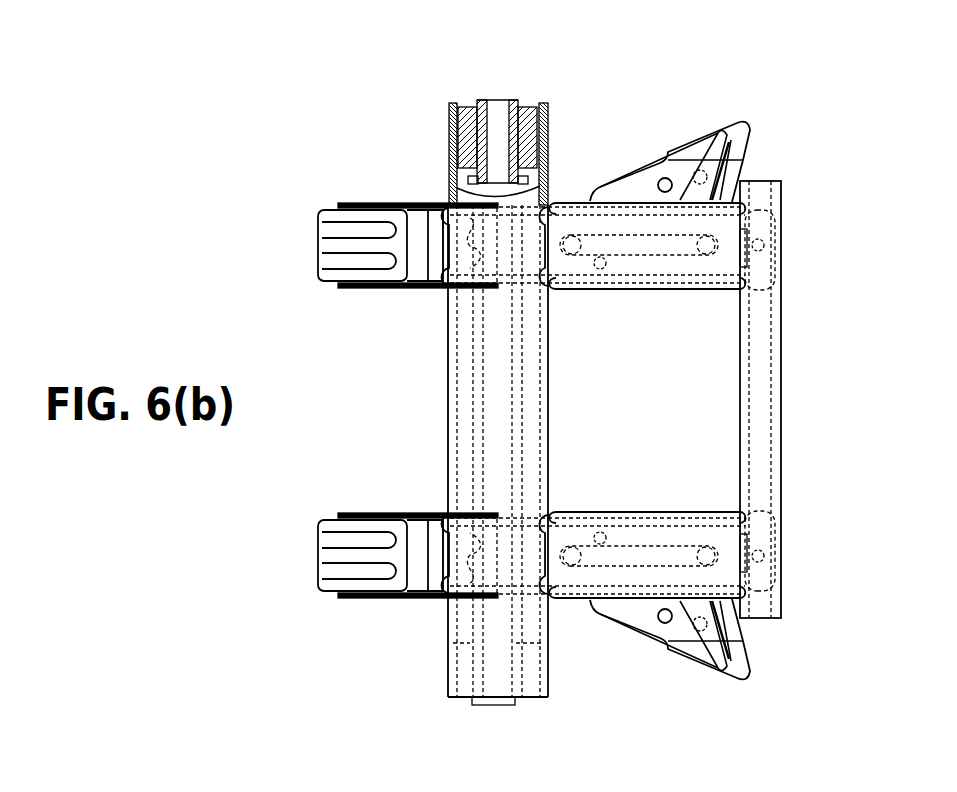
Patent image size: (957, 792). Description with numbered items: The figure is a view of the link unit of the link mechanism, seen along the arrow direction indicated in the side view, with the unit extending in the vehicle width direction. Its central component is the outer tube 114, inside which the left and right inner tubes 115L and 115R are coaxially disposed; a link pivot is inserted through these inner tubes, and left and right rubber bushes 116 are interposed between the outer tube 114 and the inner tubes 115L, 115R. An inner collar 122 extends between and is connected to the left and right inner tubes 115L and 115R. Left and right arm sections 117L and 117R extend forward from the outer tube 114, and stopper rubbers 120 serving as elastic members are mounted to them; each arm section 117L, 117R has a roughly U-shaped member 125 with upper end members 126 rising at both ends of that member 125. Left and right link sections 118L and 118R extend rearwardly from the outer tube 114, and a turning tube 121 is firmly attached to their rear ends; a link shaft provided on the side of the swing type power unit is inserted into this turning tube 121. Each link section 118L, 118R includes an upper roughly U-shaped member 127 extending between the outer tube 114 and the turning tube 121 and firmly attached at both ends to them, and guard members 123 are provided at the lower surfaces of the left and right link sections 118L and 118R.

The outer tube 114 is at (455, 105).
The right inner tube 115R is at (482, 99).
The left inner tube 115L is at (495, 706).
The rubber bush 116 is at (530, 105).
The right arm section 117R is at (383, 198).
The left arm section 117L is at (368, 606).
The right link section 118R is at (614, 224).
The left link section 118L is at (576, 578).
The stopper rubber 120 is at (328, 247).
The turning tube 121 is at (762, 189).
The inner collar 122 is at (472, 368).
The guard member 123 is at (658, 258).
The roughly U-shaped member 125 is at (417, 226).
The upper end member 126 is at (349, 203).
The upper roughly U-shaped member 127 is at (646, 224).